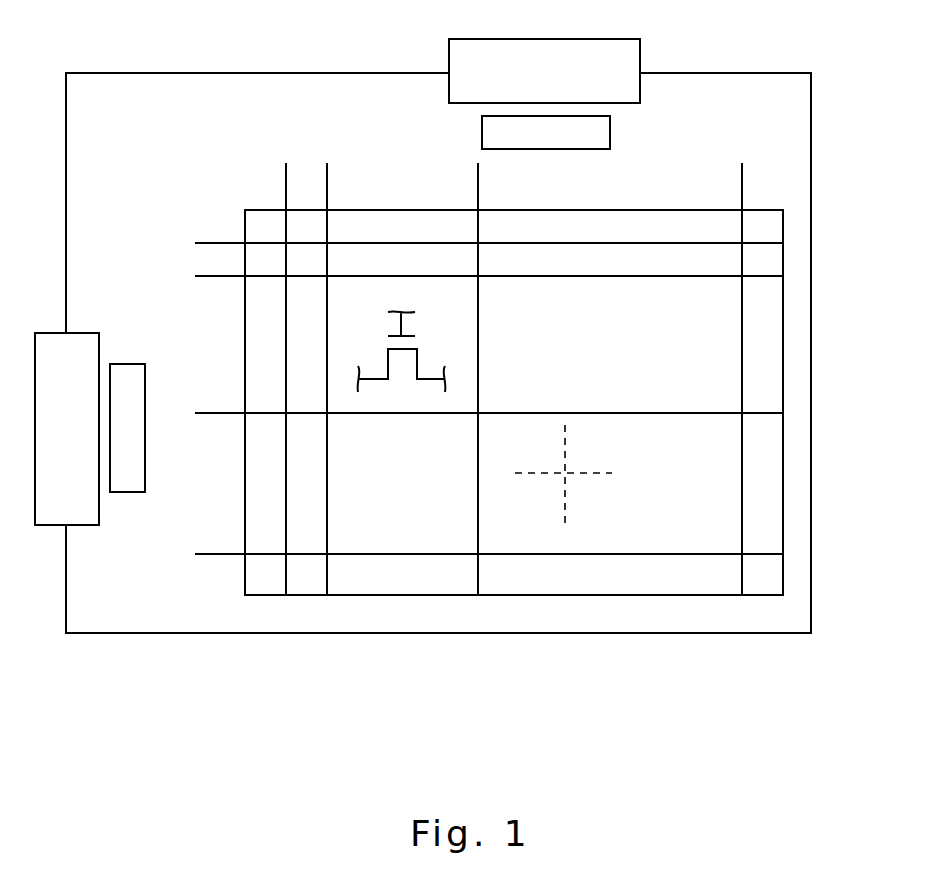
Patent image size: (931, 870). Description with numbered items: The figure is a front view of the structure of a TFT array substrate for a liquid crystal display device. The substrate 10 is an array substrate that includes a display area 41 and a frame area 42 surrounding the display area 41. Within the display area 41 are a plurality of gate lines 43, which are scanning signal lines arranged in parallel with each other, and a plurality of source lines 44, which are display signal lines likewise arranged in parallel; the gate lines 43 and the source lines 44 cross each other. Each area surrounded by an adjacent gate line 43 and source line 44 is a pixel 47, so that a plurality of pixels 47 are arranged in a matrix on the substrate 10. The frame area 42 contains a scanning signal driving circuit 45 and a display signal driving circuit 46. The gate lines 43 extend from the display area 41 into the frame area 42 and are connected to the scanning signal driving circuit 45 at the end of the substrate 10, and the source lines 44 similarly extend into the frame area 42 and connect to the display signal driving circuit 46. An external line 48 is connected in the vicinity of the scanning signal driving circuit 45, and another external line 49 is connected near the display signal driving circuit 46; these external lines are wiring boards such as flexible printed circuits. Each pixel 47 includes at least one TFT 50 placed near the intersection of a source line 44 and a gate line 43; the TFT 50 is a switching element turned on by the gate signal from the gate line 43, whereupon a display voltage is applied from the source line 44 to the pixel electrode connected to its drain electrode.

The substrate 10 is at (812, 115).
The display area 41 is at (785, 228).
The frame area 42 is at (755, 103).
The gate lines 43 is at (204, 241).
The source lines 44 is at (330, 175).
The scanning signal driving circuit 45 is at (125, 363).
The display signal driving circuit 46 is at (610, 128).
The pixel 47 is at (300, 257).
The external line 48 is at (43, 332).
The external line 49 is at (643, 53).
The TFT 50 is at (432, 343).